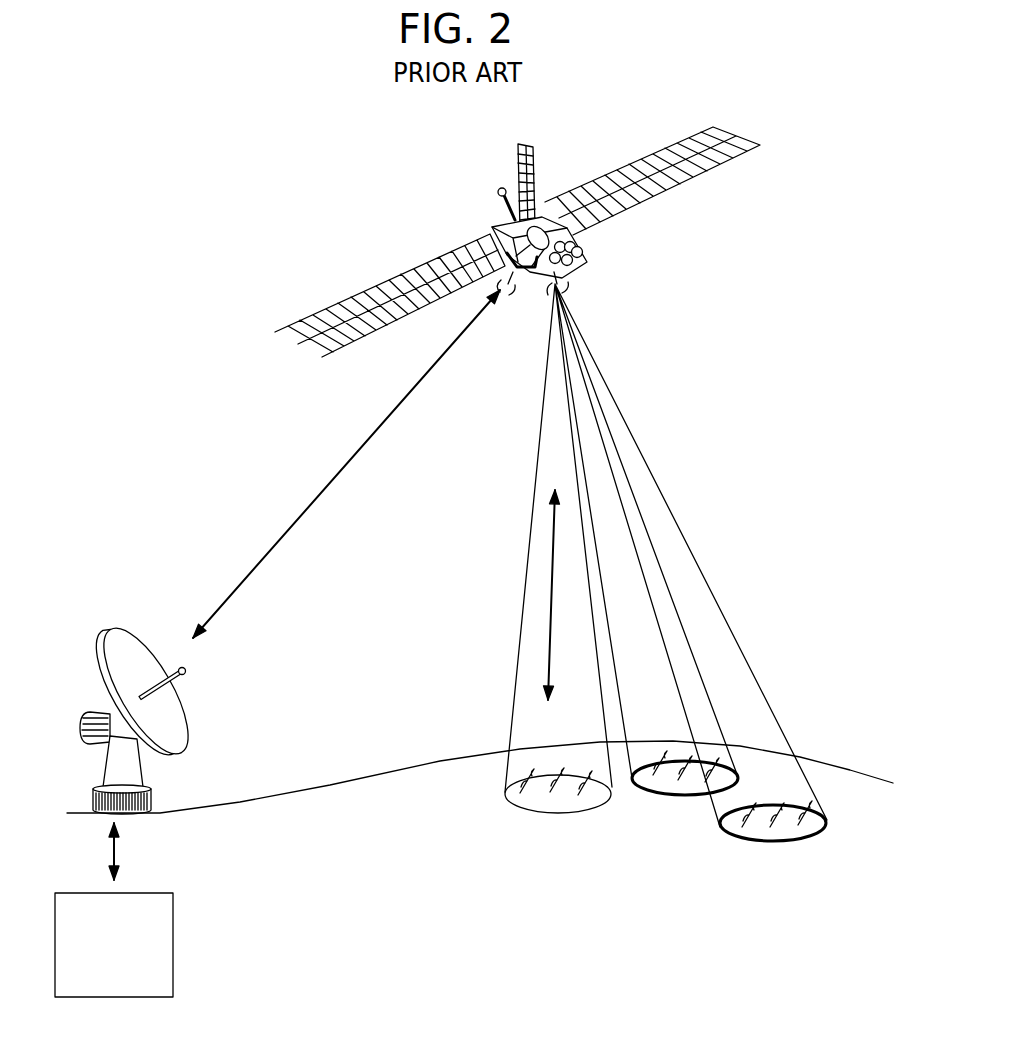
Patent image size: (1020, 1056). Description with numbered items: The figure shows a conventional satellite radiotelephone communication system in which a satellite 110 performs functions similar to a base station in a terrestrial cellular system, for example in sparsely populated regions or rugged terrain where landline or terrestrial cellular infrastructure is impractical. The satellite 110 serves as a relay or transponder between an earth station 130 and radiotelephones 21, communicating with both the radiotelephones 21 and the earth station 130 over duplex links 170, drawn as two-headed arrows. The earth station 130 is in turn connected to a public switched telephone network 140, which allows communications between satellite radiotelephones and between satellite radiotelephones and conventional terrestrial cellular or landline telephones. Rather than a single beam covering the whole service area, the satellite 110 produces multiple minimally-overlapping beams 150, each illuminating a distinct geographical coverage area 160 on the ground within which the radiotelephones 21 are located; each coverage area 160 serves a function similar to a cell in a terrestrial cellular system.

The satellite 110 is at (497, 225).
The earth station 130 is at (142, 778).
The public switched telephone network 140 is at (177, 898).
The beams 150 is at (645, 497).
The coverage areas 160 is at (512, 803).
The duplex links 170 is at (285, 538).
The radiotelephones 21 is at (877, 910).